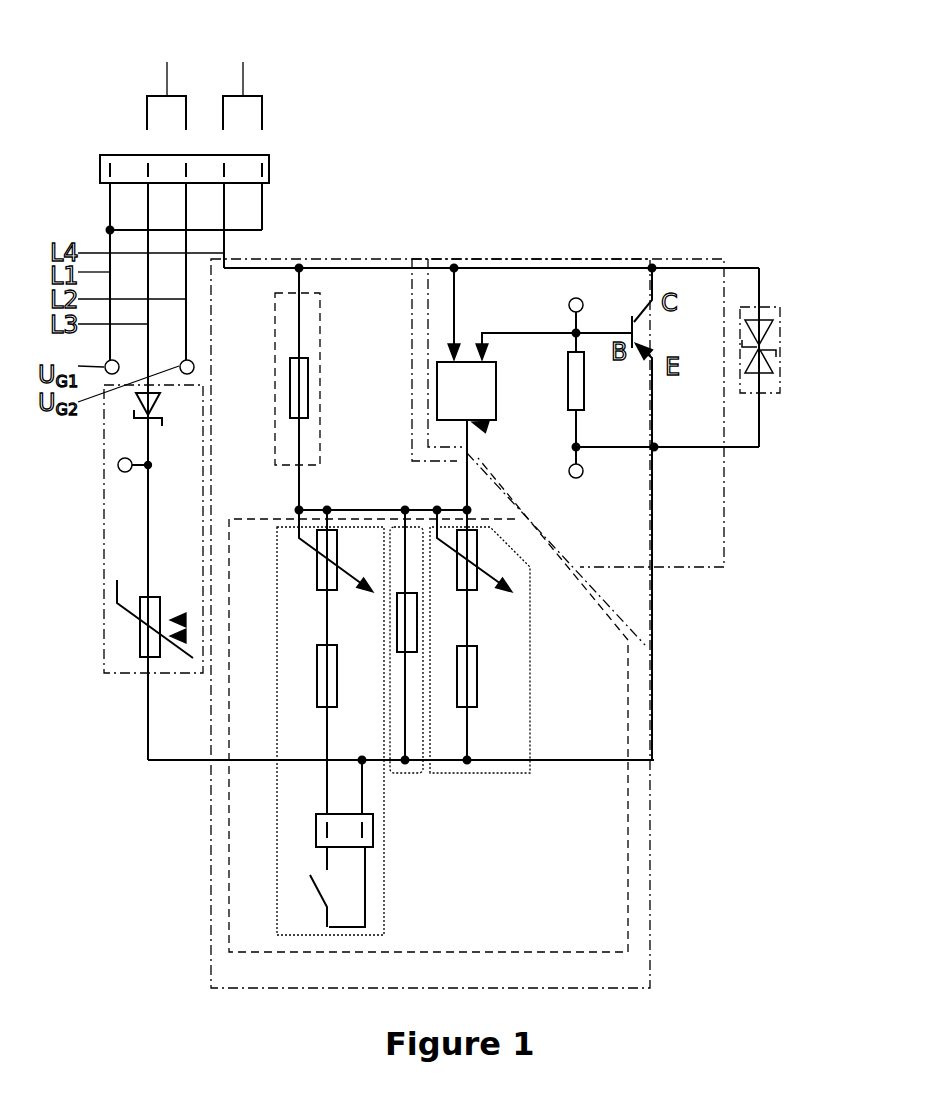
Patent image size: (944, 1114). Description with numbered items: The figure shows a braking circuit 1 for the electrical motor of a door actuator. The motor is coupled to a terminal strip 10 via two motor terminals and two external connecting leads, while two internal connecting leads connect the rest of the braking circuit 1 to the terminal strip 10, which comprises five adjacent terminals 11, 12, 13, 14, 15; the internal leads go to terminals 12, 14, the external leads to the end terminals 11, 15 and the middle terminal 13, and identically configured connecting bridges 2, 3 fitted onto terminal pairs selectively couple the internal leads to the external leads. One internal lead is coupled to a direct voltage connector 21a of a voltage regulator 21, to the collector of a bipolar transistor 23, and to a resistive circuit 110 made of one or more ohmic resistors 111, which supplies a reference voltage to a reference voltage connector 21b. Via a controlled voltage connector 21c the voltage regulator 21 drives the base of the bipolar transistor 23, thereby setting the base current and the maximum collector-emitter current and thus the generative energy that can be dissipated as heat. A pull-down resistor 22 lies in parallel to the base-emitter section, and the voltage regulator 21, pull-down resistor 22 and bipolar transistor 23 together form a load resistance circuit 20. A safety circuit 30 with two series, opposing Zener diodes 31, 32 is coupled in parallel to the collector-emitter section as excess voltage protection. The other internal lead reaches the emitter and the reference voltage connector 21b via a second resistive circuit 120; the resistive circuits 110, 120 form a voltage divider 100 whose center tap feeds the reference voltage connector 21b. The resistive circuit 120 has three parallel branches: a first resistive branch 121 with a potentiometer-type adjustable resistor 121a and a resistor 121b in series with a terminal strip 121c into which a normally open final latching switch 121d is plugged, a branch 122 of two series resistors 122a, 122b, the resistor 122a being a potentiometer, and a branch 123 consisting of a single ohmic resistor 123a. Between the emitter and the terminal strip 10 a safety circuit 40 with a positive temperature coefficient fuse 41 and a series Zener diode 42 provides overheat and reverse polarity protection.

The braking circuit 1 is at (112, 56).
The connecting bridge 2 is at (166, 81).
The connecting bridge 3 is at (242, 81).
The terminal strip 10 is at (118, 155).
The terminal 11 is at (112, 168).
The terminal 12 is at (150, 168).
The terminal 13 is at (188, 168).
The terminal 14 is at (226, 168).
The terminal 15 is at (264, 172).
The load resistance circuit 20 is at (515, 259).
The voltage regulator 21 is at (466, 436).
The direct voltage connector 21a is at (452, 346).
The reference voltage connector 21b is at (486, 426).
The controlled voltage connector 21c is at (485, 345).
The pull-down resistor 22 is at (585, 395).
The bipolar transistor 23 is at (644, 266).
The safety circuit 30 is at (790, 347).
The Zener diode 31 is at (762, 333).
The Zener diode 32 is at (768, 358).
The safety circuit 40 is at (103, 494).
The fuse 41 is at (140, 636).
The Zener diode 42 is at (143, 395).
The voltage divider 100 is at (354, 259).
The resistive circuit 110 is at (290, 293).
The ohmic resistor 111 is at (313, 358).
The second resistive circuit 120 is at (572, 580).
The first resistive branch 121 is at (399, 726).
The adjustable resistor 121a is at (317, 568).
The resistor 121b is at (340, 690).
The terminal strip 121c is at (375, 828).
The switch 121d is at (320, 885).
The resistive branch 122 is at (643, 646).
The resistor 122a is at (478, 550).
The resistor 122b is at (478, 652).
The second resistive branch 123 is at (576, 641).
The ohmic resistor 123a is at (418, 618).